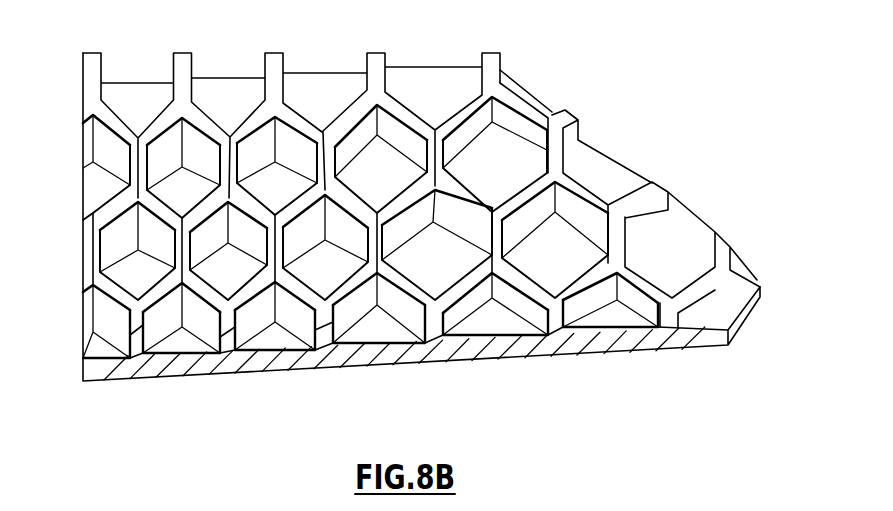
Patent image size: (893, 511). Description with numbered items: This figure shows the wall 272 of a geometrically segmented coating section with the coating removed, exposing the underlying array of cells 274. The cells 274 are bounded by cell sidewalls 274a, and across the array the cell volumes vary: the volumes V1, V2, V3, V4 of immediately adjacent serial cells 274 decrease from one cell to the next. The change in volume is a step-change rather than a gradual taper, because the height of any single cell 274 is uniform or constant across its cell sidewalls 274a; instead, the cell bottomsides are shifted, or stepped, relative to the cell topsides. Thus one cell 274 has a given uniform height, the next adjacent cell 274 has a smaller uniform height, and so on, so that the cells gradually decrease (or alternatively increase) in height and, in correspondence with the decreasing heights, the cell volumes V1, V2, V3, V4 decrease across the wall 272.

The wall 272 is at (162, 376).
The cells 274 is at (519, 156).
The cell sidewalls 274a is at (334, 325).
The cell volume V1 is at (231, 267).
The cell volume V2 is at (331, 267).
The cell volume V3 is at (437, 257).
The cell volume V4 is at (587, 250).